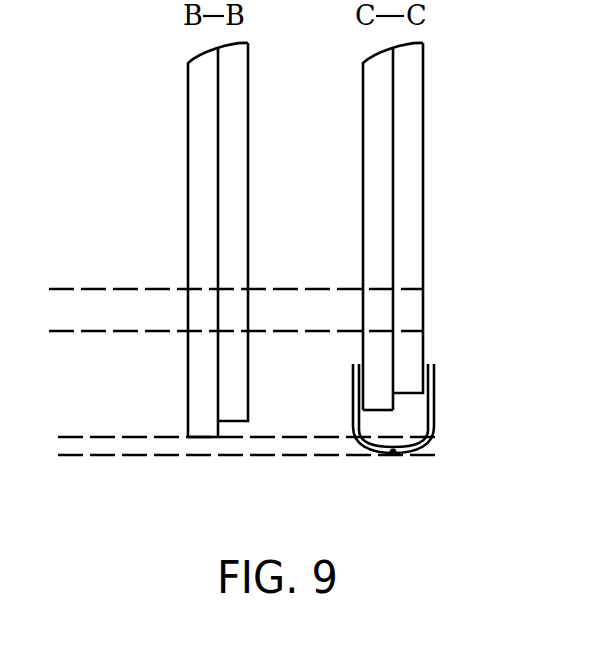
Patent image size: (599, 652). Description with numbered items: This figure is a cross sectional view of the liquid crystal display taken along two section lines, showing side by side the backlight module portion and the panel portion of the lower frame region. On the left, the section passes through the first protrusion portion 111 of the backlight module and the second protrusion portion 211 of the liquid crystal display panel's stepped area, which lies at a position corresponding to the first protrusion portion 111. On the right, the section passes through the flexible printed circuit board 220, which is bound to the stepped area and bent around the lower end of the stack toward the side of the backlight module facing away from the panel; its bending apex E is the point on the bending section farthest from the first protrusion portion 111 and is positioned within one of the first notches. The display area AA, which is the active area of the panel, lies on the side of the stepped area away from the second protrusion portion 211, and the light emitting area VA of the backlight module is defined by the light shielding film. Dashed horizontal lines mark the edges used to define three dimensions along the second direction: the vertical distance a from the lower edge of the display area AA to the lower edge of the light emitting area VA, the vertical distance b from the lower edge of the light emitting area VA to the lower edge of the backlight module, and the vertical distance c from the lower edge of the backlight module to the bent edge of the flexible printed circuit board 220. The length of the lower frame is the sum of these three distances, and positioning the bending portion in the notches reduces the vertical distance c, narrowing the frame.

The first protrusion portion 111 is at (203, 437).
The second protrusion portion 211 is at (238, 421).
The flexible printed circuit board 220 is at (430, 418).
The bending apex E is at (393, 452).
The display area AA is at (418, 160).
The light emitting area VA is at (383, 217).
The vertical distance a is at (72, 235).
The vertical distance b is at (126, 437).
The vertical distance c is at (167, 481).